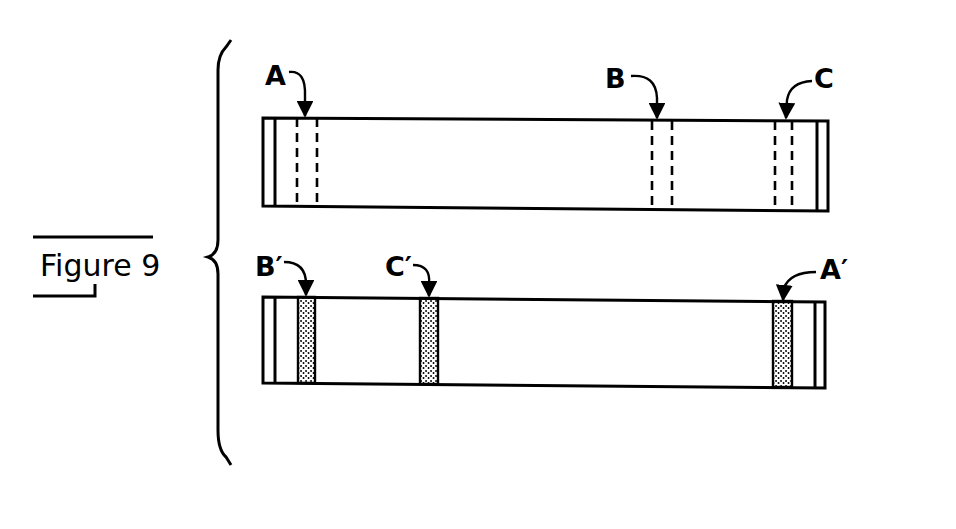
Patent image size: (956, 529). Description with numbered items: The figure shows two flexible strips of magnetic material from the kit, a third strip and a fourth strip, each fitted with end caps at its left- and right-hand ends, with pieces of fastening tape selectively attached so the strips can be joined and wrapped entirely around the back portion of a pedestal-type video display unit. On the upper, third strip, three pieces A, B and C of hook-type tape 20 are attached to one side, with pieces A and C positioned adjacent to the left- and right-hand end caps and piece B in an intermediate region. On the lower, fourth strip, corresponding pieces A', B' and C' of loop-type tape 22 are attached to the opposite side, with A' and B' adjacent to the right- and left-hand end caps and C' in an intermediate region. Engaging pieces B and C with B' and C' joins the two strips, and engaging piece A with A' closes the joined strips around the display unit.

The hook-type tape 20 is at (312, 161).
The loop-type tape 22 is at (317, 338).